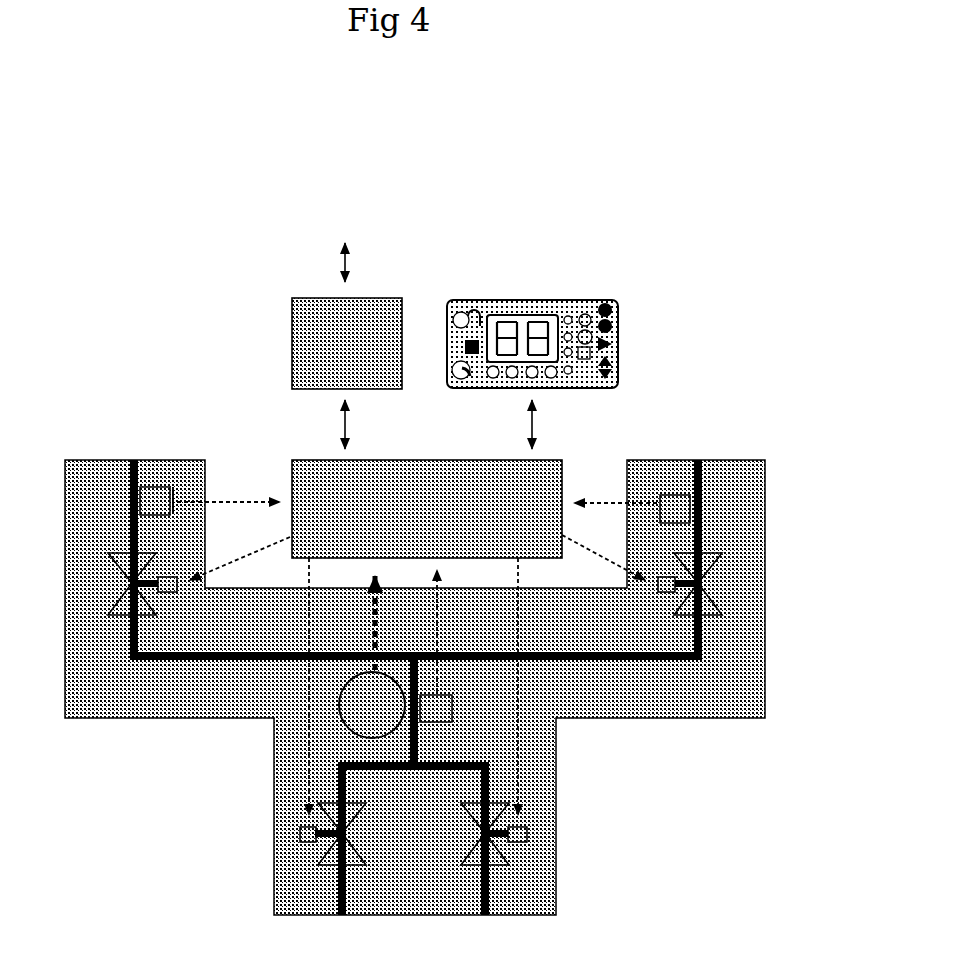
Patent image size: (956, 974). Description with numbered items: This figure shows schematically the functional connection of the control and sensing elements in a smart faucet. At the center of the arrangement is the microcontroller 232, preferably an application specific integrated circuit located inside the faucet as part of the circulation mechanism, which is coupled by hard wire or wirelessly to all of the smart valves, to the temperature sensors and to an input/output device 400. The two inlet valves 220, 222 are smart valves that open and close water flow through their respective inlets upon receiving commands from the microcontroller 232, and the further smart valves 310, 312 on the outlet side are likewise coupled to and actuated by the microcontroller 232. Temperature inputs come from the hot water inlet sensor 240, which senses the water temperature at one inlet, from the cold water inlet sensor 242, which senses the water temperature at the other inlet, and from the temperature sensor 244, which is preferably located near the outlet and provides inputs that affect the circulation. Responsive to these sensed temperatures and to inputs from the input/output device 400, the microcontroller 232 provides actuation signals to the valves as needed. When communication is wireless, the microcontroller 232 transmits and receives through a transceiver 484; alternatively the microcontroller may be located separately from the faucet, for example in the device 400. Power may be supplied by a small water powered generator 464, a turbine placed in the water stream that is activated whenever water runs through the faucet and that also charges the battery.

The inlet valve 222 is at (600, 187).
The transceiver 484 is at (280, 347).
The input/output device 400 is at (532, 359).
The microcontroller 232 is at (417, 620).
The cold water inlet sensor 242 is at (145, 478).
The hot water inlet sensor 240 is at (679, 485).
The inlet valve 220 is at (730, 583).
The water powered generator 464 is at (322, 698).
The temperature sensor 244 is at (466, 708).
The smart valve 312 is at (282, 835).
The smart valve 310 is at (543, 835).